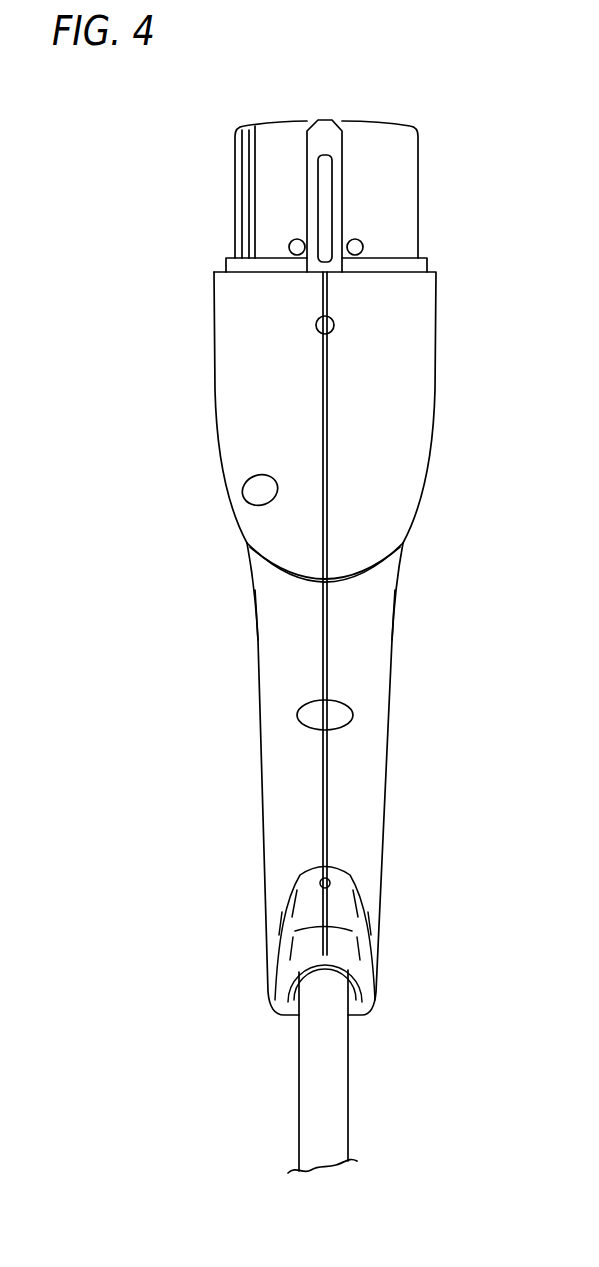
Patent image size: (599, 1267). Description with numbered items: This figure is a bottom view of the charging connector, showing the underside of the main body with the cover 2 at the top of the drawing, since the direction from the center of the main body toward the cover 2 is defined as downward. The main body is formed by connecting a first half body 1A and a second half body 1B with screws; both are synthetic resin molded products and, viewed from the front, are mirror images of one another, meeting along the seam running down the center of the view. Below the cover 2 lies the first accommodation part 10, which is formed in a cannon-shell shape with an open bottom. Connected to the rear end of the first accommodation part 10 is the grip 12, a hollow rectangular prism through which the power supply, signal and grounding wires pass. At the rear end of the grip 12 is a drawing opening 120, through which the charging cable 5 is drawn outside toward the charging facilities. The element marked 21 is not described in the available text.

The cover 2 is at (252, 123).
The connector key rib 21 is at (392, 177).
The first accommodation part 10 is at (403, 378).
The first half body 1A is at (257, 622).
The second half body 1B is at (393, 620).
The grip 12 is at (347, 783).
The drawing opening 120 is at (355, 995).
The charging cable 5 is at (308, 1098).